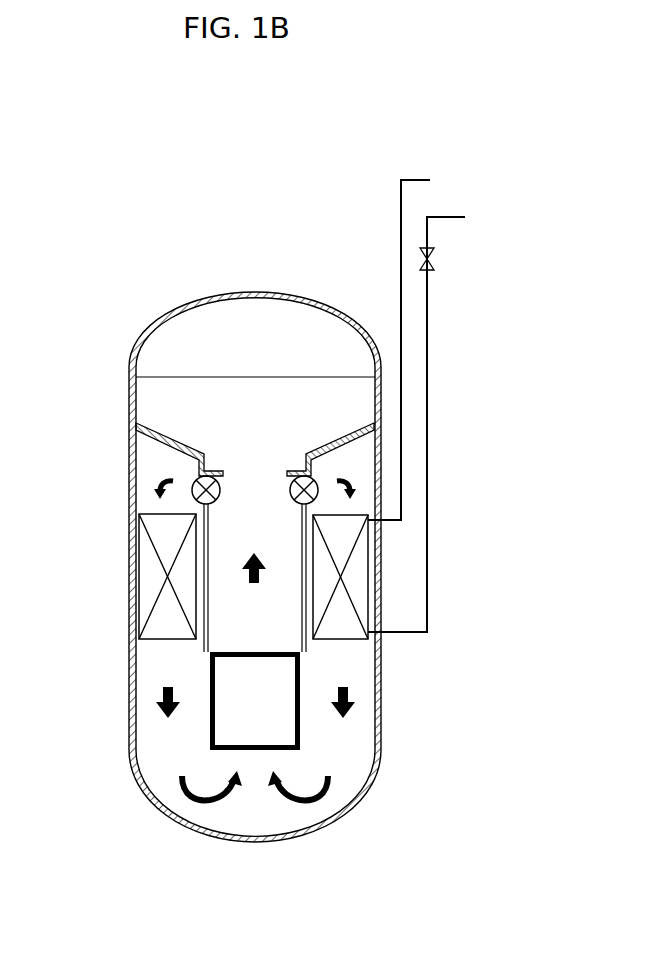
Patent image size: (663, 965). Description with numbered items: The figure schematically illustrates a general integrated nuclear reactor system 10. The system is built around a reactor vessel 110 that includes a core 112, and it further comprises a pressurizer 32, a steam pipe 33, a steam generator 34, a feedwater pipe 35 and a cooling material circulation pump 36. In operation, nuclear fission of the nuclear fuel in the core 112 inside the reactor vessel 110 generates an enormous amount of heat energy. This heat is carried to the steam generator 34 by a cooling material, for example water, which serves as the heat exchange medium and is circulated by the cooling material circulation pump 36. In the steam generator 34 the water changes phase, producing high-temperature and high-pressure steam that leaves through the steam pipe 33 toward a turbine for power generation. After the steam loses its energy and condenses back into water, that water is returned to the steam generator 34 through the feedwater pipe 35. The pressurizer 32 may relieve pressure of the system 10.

The nuclear reactor system 10 is at (59, 194).
The pressurizer 32 is at (182, 340).
The steam pipe 33 is at (401, 197).
The steam generator 34 is at (153, 577).
The feedwater pipe 35 is at (427, 430).
The cooling material circulation pump 36 is at (203, 475).
The reactor vessel 110 is at (130, 400).
The core 112 is at (228, 727).